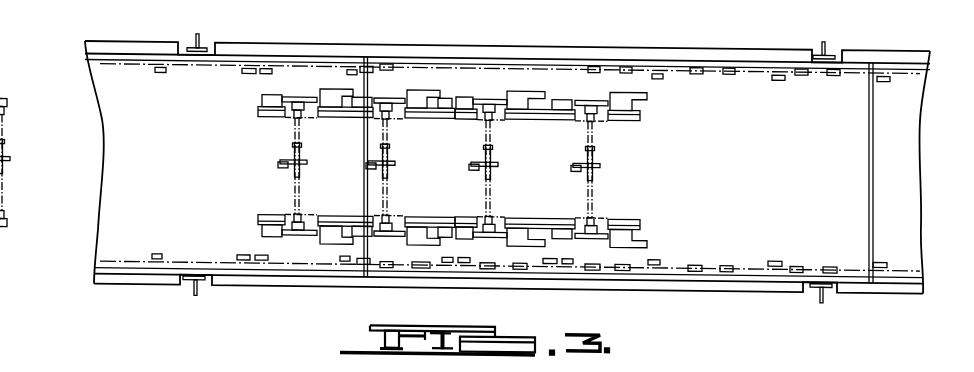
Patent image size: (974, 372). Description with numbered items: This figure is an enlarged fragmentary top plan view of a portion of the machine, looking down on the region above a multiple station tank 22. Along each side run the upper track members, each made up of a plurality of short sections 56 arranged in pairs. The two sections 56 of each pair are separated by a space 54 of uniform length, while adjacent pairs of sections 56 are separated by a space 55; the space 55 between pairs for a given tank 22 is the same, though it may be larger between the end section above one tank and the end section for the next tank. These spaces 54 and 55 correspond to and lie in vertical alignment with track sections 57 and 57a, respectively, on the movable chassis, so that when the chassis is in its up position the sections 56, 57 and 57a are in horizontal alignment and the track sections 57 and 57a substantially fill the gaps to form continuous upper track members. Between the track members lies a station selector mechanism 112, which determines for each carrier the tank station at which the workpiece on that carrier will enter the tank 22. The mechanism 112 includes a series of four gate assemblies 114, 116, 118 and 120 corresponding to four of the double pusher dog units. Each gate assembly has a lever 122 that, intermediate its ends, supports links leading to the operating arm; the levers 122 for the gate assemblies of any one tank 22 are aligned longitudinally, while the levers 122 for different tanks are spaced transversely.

The tank 22 is at (868, 167).
The space 54 is at (622, 58).
The space 55 is at (641, 58).
The short section 56 is at (593, 58).
The track section 57 is at (723, 263).
The track section 57a is at (777, 274).
The station selector mechanism 112 is at (268, 166).
The gate assembly 114 is at (307, 204).
The gate assembly 116 is at (398, 203).
The gate assembly 118 is at (500, 202).
The gate assembly 120 is at (603, 201).
The lever 122 is at (303, 158).